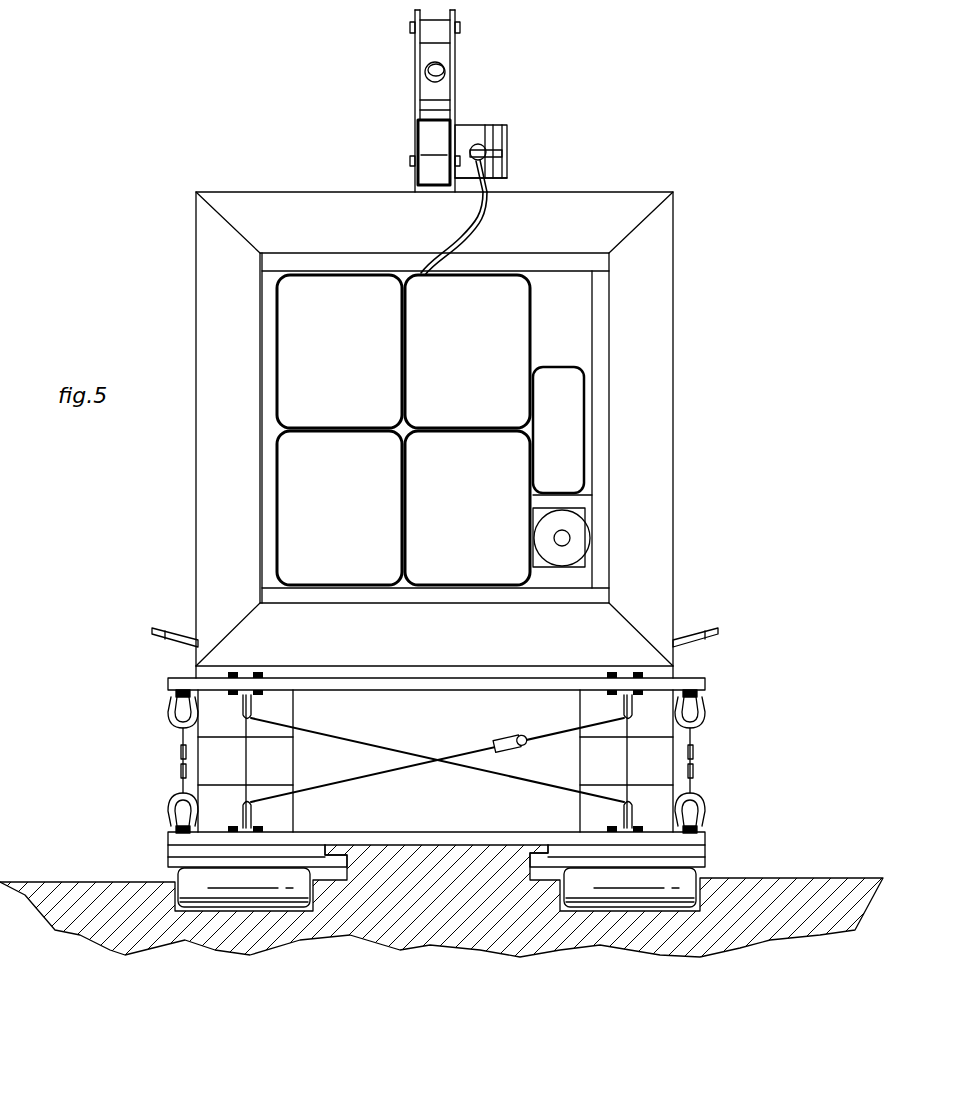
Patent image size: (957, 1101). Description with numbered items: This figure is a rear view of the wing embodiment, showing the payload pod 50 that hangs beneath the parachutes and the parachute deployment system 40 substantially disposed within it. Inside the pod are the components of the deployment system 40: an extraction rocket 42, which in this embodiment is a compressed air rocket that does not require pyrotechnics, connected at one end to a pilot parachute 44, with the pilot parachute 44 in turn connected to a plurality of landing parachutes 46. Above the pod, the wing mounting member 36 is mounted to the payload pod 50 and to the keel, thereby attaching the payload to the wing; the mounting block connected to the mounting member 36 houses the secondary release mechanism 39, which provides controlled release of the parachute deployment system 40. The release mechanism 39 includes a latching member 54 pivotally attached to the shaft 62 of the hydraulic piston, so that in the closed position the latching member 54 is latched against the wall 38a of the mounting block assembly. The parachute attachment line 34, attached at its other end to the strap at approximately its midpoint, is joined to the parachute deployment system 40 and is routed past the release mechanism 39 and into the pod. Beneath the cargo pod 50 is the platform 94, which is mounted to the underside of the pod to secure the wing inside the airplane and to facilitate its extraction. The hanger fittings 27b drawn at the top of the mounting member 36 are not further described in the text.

The hanger bracket 27b is at (413, 82).
The wing mounting member 36 is at (440, 120).
The secondary release mechanism 39 is at (510, 125).
The latching member 54 is at (500, 152).
The wall of mounting block assembly 38a is at (508, 178).
The payload pod 50 is at (613, 192).
The shaft 62 is at (487, 185).
The parachute attachment line 34 is at (473, 230).
The parachute deployment system 40 is at (253, 505).
The landing parachutes 46 is at (352, 360).
The pilot parachute 44 is at (571, 413).
The extraction rocket 42 is at (578, 538).
The platform 94 is at (728, 722).